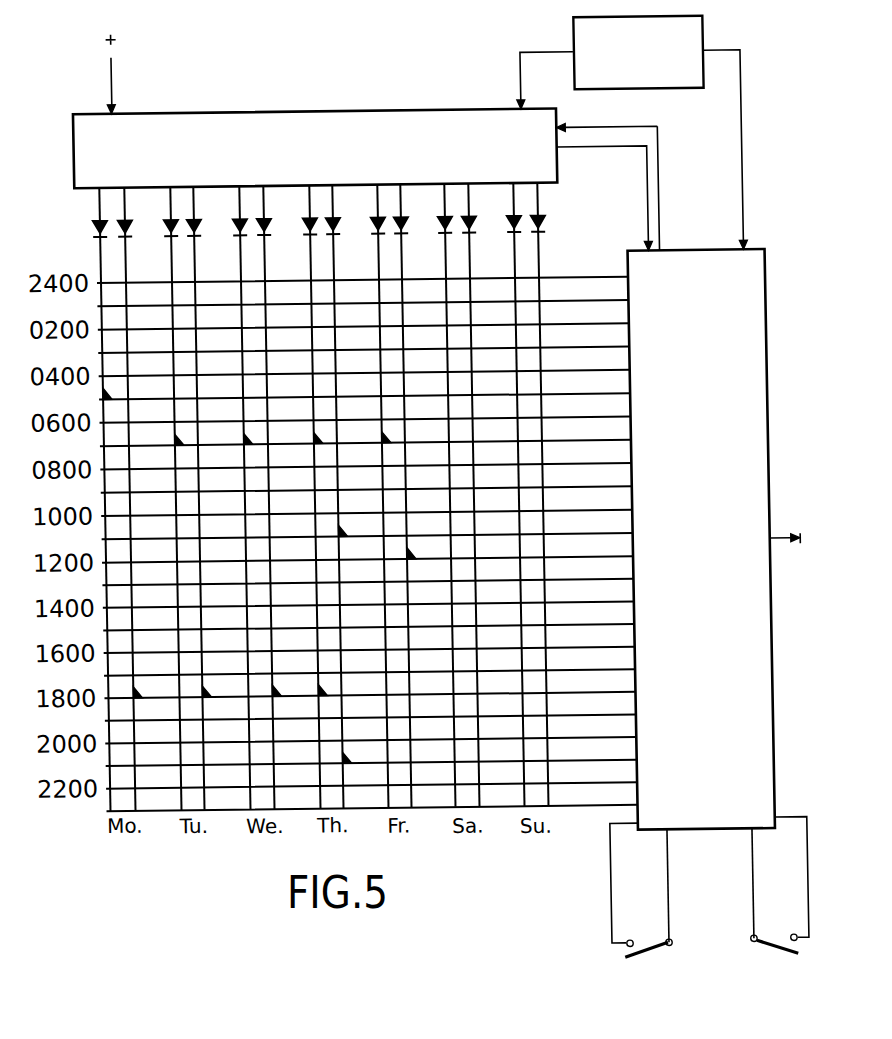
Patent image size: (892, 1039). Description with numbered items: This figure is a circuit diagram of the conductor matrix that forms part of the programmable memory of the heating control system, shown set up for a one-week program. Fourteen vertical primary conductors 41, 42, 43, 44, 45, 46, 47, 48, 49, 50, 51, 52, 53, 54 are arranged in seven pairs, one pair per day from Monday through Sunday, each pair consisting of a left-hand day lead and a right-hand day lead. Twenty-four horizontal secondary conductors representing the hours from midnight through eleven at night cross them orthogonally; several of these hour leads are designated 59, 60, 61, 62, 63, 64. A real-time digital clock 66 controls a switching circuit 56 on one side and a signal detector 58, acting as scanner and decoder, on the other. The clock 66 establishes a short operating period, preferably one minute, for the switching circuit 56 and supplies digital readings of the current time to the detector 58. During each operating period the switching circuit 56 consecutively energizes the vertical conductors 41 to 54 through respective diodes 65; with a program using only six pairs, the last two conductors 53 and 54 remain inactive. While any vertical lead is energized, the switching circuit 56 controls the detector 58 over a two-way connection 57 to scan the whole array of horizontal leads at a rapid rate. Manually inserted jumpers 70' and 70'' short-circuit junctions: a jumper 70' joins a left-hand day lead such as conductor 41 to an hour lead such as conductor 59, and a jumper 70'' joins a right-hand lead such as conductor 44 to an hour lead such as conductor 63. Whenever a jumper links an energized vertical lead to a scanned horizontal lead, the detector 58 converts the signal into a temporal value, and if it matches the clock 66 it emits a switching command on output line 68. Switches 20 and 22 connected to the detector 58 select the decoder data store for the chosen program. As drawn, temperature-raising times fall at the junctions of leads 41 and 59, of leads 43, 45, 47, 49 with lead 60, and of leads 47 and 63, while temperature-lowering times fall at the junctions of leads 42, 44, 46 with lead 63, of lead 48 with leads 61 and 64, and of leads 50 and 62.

The switch 20 is at (768, 968).
The switch 22 is at (633, 966).
The primary conductor 41 is at (101, 263).
The primary conductor 42 is at (126, 270).
The primary conductor 43 is at (170, 206).
The primary conductor 44 is at (195, 217).
The primary conductor 45 is at (241, 272).
The primary conductor 46 is at (265, 218).
The primary conductor 47 is at (311, 263).
The primary conductor 48 is at (334, 221).
The primary conductor 49 is at (379, 268).
The primary conductor 50 is at (410, 193).
The primary conductor 51 is at (446, 269).
The primary conductor 52 is at (477, 194).
The primary conductor 53 is at (515, 248).
The primary conductor 54 is at (539, 256).
The switching circuit 56 is at (313, 115).
The two-way connection 57 is at (659, 169).
The signal detector 58 is at (709, 812).
The secondary conductor 59 is at (606, 396).
The secondary conductor 60 is at (614, 443).
The secondary conductor 61 is at (610, 536).
The secondary conductor 62 is at (610, 559).
The secondary conductor 63 is at (616, 694).
The secondary conductor 64 is at (606, 763).
The diodes 65 is at (126, 224).
The real-time digital clock 66 is at (686, 97).
The output line 68 is at (786, 543).
The jumper 70' is at (259, 458).
The jumper 70'' is at (264, 709).